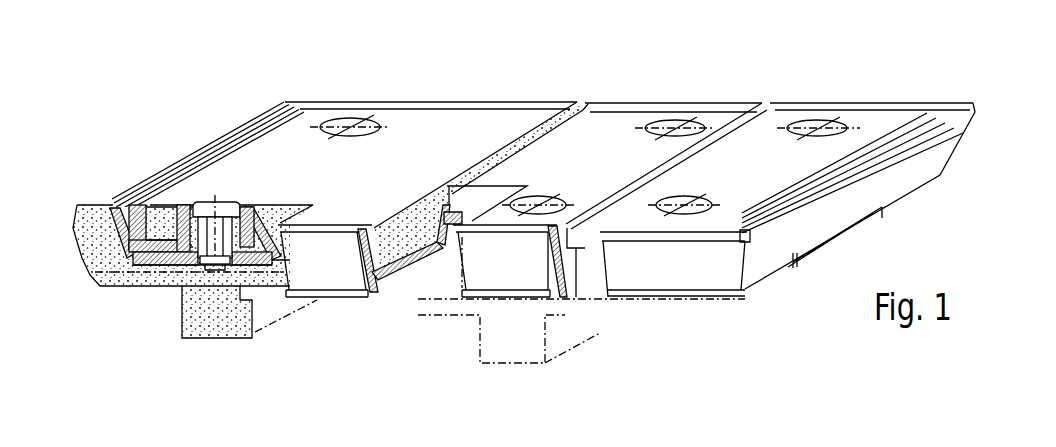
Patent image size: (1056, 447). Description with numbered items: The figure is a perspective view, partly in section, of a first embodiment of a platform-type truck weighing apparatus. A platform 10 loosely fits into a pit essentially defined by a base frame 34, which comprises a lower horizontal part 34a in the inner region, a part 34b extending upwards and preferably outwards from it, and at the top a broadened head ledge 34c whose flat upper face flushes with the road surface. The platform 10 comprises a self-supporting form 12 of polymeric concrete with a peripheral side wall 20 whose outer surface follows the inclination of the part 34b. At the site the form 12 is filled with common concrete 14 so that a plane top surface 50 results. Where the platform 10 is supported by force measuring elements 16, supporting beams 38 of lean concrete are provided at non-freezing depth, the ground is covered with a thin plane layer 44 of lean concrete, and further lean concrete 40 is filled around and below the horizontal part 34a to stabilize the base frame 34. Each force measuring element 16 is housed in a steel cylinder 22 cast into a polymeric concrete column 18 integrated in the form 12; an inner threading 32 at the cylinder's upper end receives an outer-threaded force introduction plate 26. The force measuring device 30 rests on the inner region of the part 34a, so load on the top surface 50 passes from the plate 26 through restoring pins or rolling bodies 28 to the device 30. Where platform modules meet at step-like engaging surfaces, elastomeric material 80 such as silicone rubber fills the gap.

The platform 10 is at (960, 191).
The self-supporting form 12 is at (395, 272).
The concrete filling 14 is at (413, 240).
The force measuring element 16 is at (338, 125).
The polymeric concrete column 18 is at (254, 236).
The peripheral side wall 20 is at (133, 250).
The steel cylinder 22 is at (170, 258).
The force introduction plate 26 is at (216, 206).
The restoring pins 28 is at (190, 262).
The force measuring device 30 is at (222, 270).
The inner threading 32 is at (240, 222).
The base frame 34 is at (306, 293).
The lower horizontal part 34a is at (163, 252).
The upward-extending part 34b is at (140, 252).
The head ledge 34c is at (107, 208).
The supporting beam 38 is at (212, 322).
The lean concrete 40 is at (110, 255).
The plane layer 44 is at (270, 278).
The top surface 50 is at (492, 130).
The elastomeric material 80 is at (572, 254).